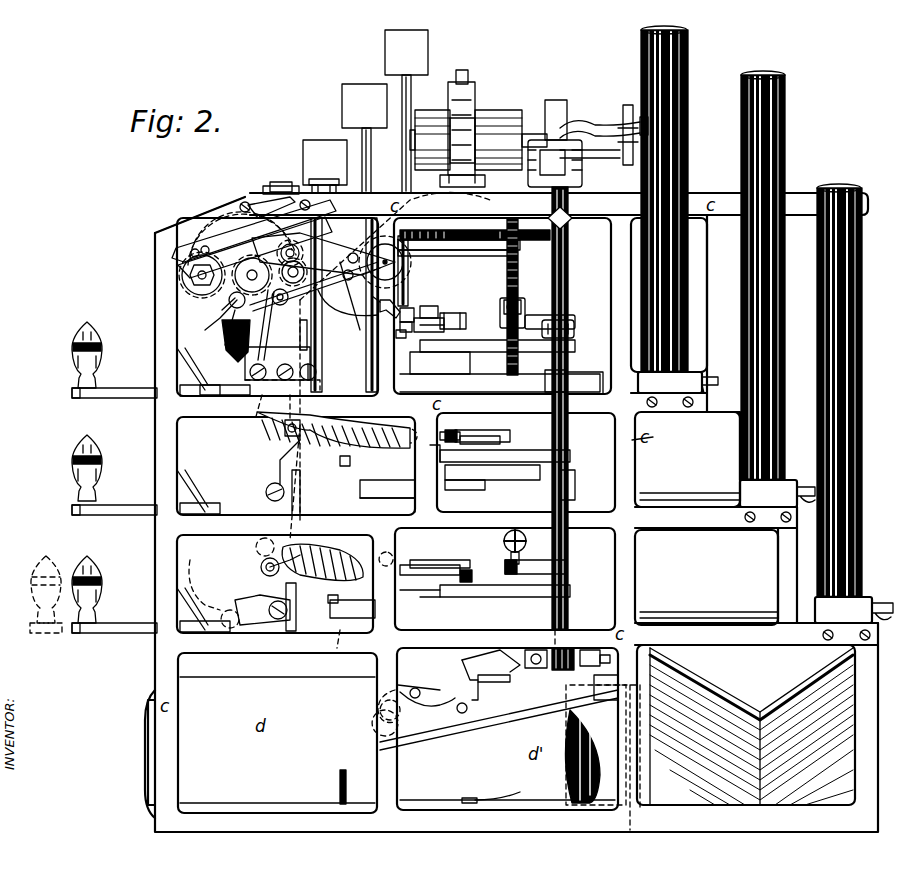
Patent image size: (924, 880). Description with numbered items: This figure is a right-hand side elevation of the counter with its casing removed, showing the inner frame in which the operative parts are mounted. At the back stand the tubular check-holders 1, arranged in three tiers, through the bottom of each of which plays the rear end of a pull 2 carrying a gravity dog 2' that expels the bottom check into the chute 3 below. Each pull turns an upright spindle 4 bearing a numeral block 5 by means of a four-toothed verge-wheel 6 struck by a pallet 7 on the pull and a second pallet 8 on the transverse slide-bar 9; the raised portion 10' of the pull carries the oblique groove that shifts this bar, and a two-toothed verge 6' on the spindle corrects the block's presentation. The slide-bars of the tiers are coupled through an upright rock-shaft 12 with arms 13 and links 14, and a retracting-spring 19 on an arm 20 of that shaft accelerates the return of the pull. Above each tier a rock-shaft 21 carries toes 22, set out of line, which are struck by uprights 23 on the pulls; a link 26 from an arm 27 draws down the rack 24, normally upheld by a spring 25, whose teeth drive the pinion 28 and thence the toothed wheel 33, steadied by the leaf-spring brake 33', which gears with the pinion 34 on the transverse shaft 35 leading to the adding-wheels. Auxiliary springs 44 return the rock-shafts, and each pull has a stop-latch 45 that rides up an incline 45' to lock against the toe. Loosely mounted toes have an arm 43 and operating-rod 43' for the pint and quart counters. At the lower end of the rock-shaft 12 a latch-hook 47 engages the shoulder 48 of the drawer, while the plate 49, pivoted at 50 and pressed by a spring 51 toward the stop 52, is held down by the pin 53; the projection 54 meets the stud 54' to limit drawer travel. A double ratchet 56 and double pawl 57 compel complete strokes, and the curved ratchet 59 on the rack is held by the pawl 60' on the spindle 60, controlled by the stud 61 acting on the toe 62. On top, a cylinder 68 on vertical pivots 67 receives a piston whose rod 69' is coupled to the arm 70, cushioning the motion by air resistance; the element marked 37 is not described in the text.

The tubular check-holder 1 is at (682, 146).
The pull 2 is at (381, 477).
The gravity dog or latch 2' is at (802, 493).
The chute 3 is at (742, 702).
The upright spindle 4 is at (371, 153).
The numeral-bearing block 5 is at (385, 48).
The verge-wheel 6 is at (386, 324).
The verge 6' is at (355, 470).
The pallet 7 is at (478, 448).
The pallet 8 is at (378, 553).
The slide-bar 9 is at (445, 360).
The raised portion of the pull 10' is at (510, 482).
The upright rock-shaft 12 is at (556, 100).
The arm 13 is at (515, 600).
The link 14 is at (444, 318).
The retracting-spring 19 is at (504, 543).
The arm 20 is at (535, 560).
The rock-shaft 21 is at (222, 310).
The toe 22 is at (224, 340).
The upright 23 is at (300, 330).
The rack 24 is at (323, 256).
The spring 25 is at (345, 290).
The link 26 is at (268, 325).
The arm 27 is at (333, 430).
The pinion 28 is at (188, 280).
The toothed wheel 33 is at (245, 229).
The leaf-spring 33' is at (255, 247).
The pinion 34 is at (252, 268).
The transversely-arranged shaft 35 is at (274, 266).
The gear wheel 37 is at (218, 203).
The arm 43 is at (278, 500).
The operating-rod 43' is at (314, 239).
The auxiliary spring 44 is at (283, 555).
The stop-latch 45 is at (255, 611).
The incline 45' is at (203, 490).
The latch-hook 47 is at (480, 664).
The shoulder 48 is at (490, 685).
The plate 49 is at (450, 726).
The pivot 50 is at (612, 688).
The spring 51 is at (432, 700).
The stop 52 is at (525, 658).
The pin 53 is at (415, 688).
The projection 54 is at (531, 756).
The stud 54' is at (326, 787).
The double ratchet 56 is at (462, 240).
The double pawl 57 is at (418, 245).
The curved ratchet 59 is at (429, 314).
The upright spindle 60 is at (501, 296).
The pawl 60' is at (504, 308).
The stud 61 is at (574, 325).
The toe 62 is at (535, 315).
The vertical pivot 67 is at (462, 70).
The cylinder 68 is at (489, 112).
The piston-rod 69' is at (590, 158).
The arm 70 is at (592, 123).